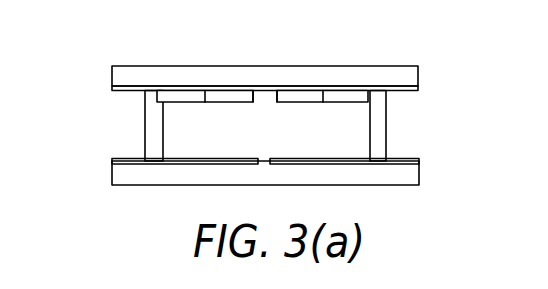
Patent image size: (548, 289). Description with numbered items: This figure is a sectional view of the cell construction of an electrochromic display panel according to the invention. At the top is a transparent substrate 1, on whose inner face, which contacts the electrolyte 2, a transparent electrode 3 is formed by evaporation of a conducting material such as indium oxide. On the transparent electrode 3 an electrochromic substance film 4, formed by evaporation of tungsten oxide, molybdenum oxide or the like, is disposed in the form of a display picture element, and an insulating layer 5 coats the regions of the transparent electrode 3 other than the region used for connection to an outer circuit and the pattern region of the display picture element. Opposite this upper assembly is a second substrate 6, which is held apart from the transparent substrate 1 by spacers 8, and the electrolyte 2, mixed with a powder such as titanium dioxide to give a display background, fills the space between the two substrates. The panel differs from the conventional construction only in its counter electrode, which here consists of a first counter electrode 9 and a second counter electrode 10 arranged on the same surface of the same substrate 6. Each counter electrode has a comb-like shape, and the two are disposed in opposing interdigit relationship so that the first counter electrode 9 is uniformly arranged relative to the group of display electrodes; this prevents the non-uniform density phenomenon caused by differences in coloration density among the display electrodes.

The transparent substrate 1 is at (385, 73).
The electrolyte 2 is at (214, 144).
The transparent electrode 3 is at (122, 92).
The electrochromic substance film 4 is at (305, 100).
The insulating layer 5 is at (178, 93).
The substrate 6 is at (137, 178).
The spacers 8 is at (143, 137).
The first counter electrode 9 is at (197, 163).
The second counter electrode 10 is at (357, 163).